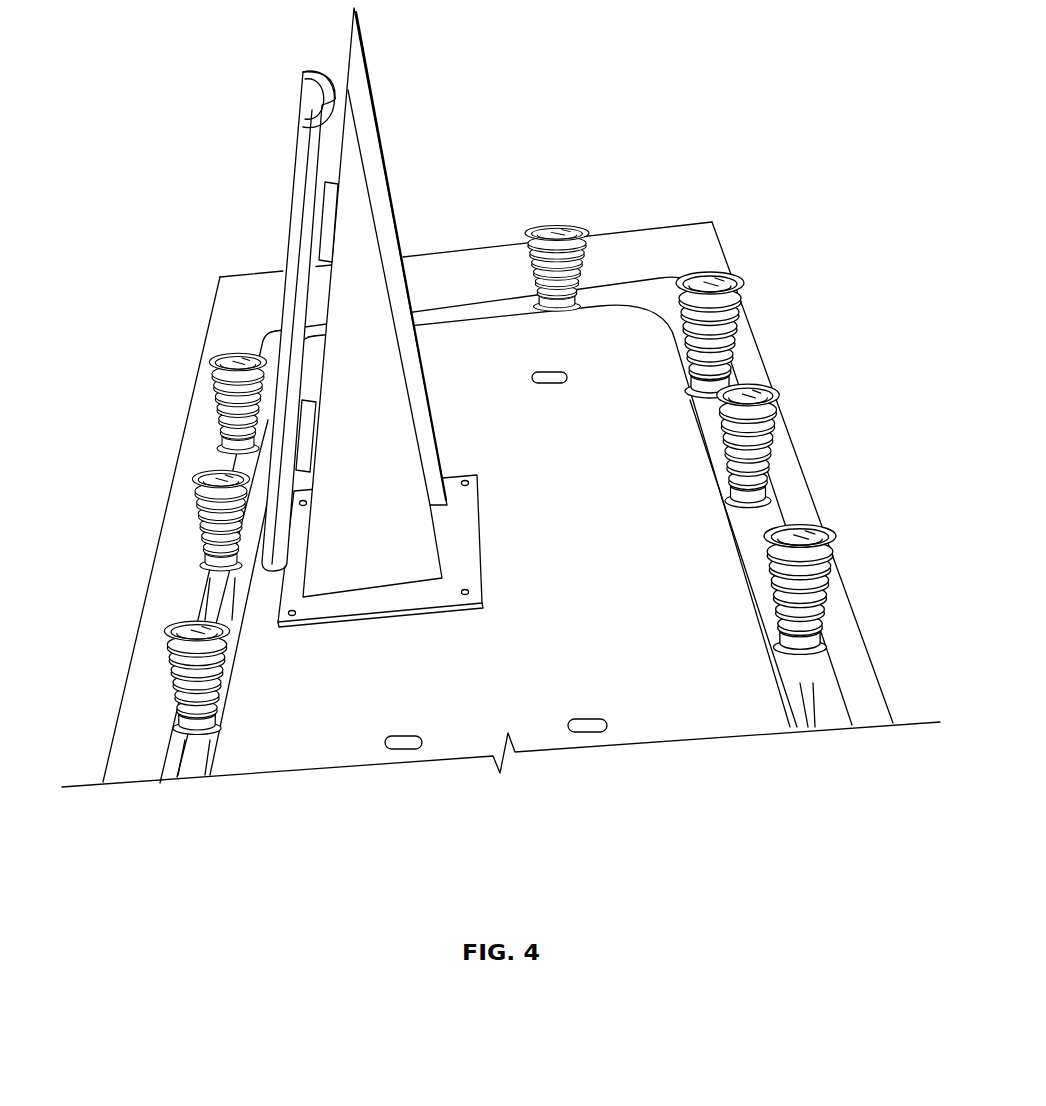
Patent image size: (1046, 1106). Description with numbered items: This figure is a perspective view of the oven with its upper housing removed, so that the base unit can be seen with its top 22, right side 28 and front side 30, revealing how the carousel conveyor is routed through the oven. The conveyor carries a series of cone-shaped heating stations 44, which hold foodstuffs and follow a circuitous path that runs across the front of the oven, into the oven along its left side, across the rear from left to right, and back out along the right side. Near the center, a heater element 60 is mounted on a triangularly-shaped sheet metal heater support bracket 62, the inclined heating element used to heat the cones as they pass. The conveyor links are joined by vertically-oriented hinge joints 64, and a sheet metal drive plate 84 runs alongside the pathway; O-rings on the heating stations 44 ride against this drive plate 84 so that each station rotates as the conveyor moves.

The top 22 is at (707, 228).
The right side 28 is at (673, 222).
The front side 30 is at (768, 355).
The heating stations 44 is at (551, 218).
The heater element 60 is at (297, 138).
The heater support bracket 62 is at (385, 162).
The hinge joints 64 is at (315, 508).
The drive plate 84 is at (170, 603).